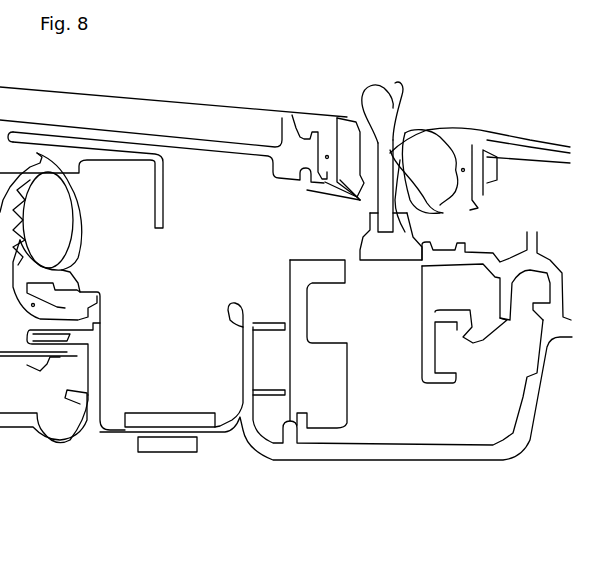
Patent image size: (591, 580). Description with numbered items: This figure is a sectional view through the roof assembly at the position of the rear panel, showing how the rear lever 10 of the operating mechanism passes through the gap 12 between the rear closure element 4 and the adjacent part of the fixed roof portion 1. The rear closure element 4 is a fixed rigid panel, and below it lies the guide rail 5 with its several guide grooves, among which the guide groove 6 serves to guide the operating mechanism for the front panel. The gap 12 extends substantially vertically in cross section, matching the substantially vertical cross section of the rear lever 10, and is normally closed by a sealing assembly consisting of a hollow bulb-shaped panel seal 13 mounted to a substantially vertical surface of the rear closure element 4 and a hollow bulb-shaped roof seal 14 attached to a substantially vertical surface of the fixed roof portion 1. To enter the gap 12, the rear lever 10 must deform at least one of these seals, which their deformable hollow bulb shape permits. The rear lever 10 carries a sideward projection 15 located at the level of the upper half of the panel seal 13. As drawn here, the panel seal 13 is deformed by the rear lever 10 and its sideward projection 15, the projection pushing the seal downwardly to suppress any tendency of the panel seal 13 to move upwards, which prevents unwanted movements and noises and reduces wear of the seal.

The fixed roof portion 1 is at (533, 157).
The rear closure element 4 is at (210, 117).
The guide rail 5 is at (514, 460).
The guide groove 6 is at (385, 363).
The rear lever 10 is at (403, 120).
The gap 12 is at (387, 160).
The panel seal 13 is at (352, 123).
The roof seal 14 is at (423, 127).
The sideward projection 15 is at (372, 92).